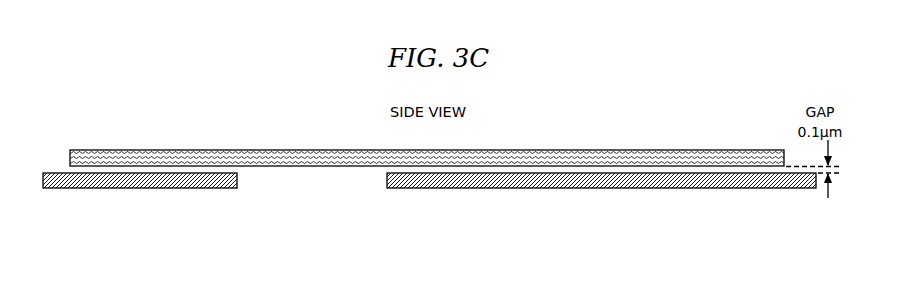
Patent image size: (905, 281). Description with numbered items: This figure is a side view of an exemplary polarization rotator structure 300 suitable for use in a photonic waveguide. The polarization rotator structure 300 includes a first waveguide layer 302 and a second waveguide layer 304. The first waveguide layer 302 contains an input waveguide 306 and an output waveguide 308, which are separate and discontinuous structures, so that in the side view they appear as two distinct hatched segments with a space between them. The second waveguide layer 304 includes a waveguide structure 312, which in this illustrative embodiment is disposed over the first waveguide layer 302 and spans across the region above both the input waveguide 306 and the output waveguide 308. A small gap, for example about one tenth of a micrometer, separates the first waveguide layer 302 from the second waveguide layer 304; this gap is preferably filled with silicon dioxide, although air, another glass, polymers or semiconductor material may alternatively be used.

The polarization rotator structure 300 is at (556, 125).
The first waveguide layer 302 is at (420, 205).
The second waveguide layer 304 is at (416, 132).
The input waveguide 306 is at (180, 188).
The output waveguide 308 is at (618, 188).
The waveguide structure 312 is at (210, 152).